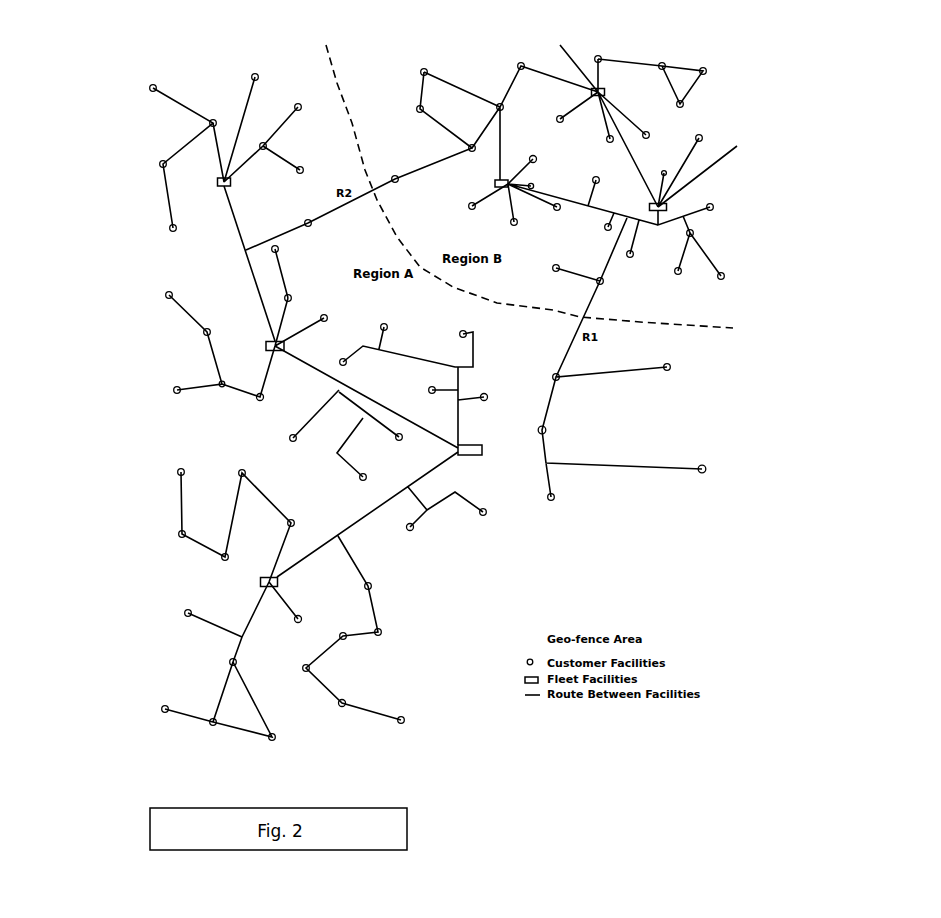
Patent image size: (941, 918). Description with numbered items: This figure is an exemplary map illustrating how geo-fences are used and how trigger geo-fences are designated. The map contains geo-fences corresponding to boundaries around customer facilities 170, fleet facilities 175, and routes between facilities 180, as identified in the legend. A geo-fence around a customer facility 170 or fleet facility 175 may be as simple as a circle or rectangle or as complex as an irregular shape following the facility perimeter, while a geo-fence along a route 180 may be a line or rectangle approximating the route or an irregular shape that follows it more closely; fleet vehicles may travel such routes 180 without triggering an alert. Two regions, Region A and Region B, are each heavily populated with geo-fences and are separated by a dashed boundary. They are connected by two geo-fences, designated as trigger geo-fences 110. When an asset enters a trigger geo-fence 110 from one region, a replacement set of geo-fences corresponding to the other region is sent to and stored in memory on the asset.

The trigger geo-fence 110 is at (323, 196).
The customer facilities 170 is at (437, 398).
The fleet facilities 175 is at (470, 388).
The routes between facilities 180 is at (445, 391).